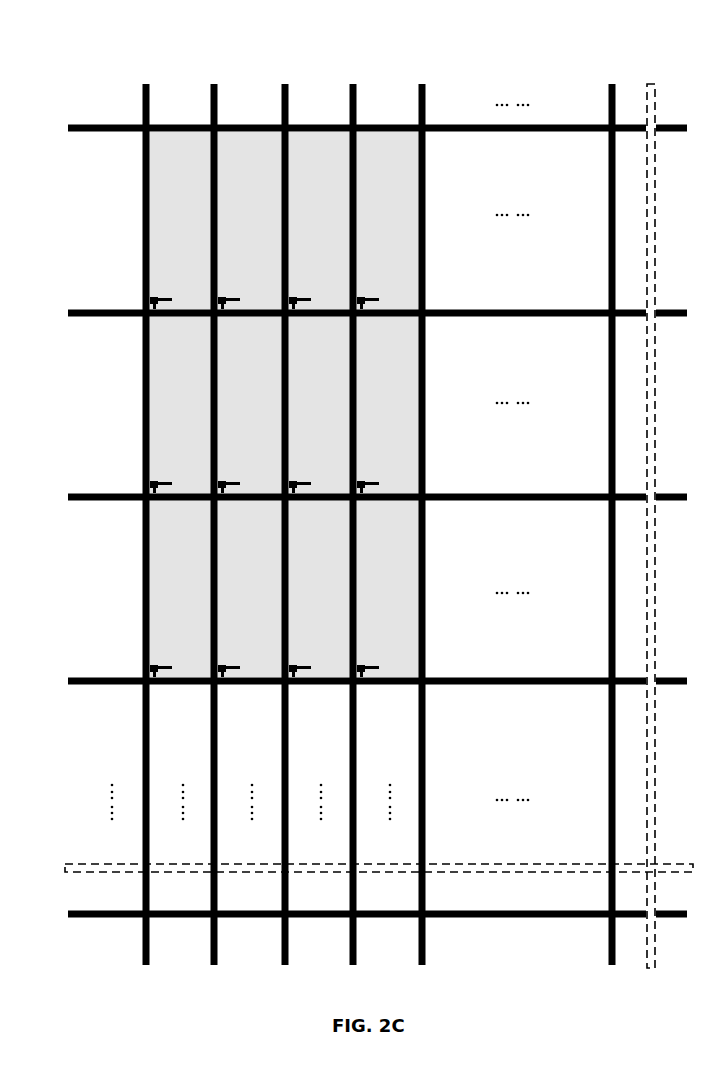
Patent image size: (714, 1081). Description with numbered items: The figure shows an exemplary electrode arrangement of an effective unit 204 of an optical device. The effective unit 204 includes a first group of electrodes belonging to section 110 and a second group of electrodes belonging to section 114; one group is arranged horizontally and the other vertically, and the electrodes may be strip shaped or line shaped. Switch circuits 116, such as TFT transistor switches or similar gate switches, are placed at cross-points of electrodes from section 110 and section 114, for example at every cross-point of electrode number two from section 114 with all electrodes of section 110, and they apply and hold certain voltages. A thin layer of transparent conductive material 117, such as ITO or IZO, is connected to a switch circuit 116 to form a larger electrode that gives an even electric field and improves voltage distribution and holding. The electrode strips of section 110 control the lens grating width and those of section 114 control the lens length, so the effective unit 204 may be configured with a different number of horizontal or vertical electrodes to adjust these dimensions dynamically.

The effective unit 204 is at (579, 40).
The section 110 is at (143, 95).
The section 114 is at (122, 494).
The switch circuit 116 is at (150, 299).
The transparent conductive material layer 117 is at (158, 205).